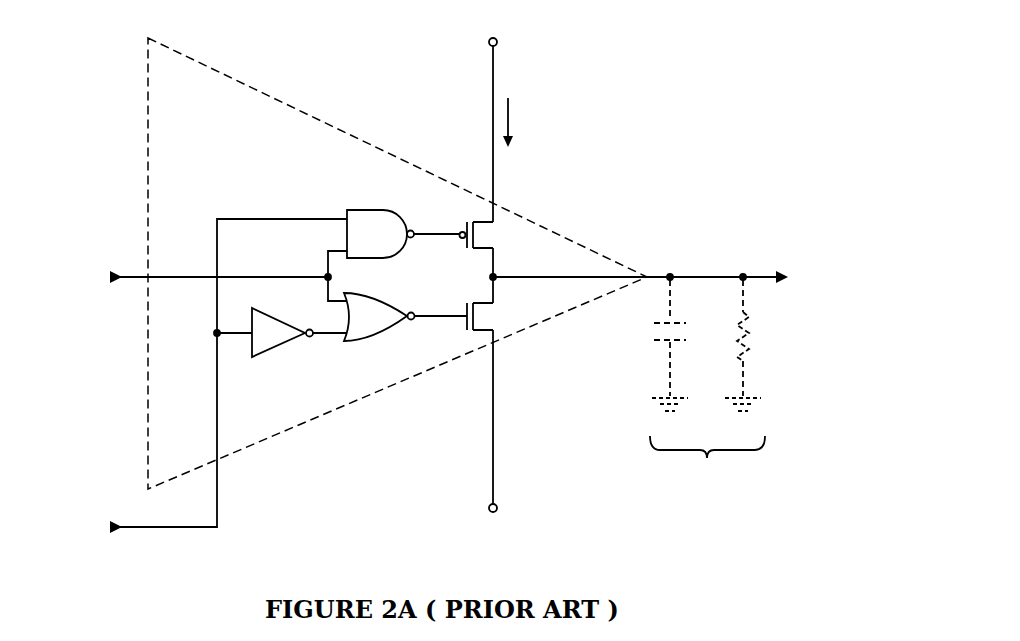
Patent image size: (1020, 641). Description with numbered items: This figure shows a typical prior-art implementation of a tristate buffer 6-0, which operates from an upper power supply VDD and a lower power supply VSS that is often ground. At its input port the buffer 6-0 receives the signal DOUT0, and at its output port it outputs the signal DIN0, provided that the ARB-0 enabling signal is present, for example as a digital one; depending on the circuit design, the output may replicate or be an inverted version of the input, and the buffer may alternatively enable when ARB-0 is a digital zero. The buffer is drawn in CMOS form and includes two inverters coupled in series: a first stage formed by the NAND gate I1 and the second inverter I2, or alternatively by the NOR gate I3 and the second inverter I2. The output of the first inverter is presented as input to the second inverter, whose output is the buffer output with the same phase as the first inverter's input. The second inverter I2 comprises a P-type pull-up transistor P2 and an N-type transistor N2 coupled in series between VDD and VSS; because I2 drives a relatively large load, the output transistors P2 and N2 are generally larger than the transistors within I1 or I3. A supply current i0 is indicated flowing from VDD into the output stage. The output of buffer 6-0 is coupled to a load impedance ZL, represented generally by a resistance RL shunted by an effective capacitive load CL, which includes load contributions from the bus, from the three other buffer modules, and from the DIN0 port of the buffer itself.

The tristate buffer 6-0 is at (376, 101).
The NAND gate I1 is at (383, 218).
The NOR gate I3 is at (383, 331).
The second inverter I2 is at (458, 277).
The PMOS transistor P2 is at (468, 235).
The NMOS transistor N2 is at (470, 316).
The input signal Dout0 DOUT0 is at (191, 276).
The enabling signal ARB-0 is at (191, 377).
The output signal Din0 DIN0 is at (722, 275).
The upper power supply VDD is at (498, 117).
The lower power supply VSS is at (497, 439).
The supply current i0 is at (519, 122).
The effective capacitive load CL is at (654, 345).
The resistance RL is at (753, 345).
The load impedance ZL is at (707, 470).